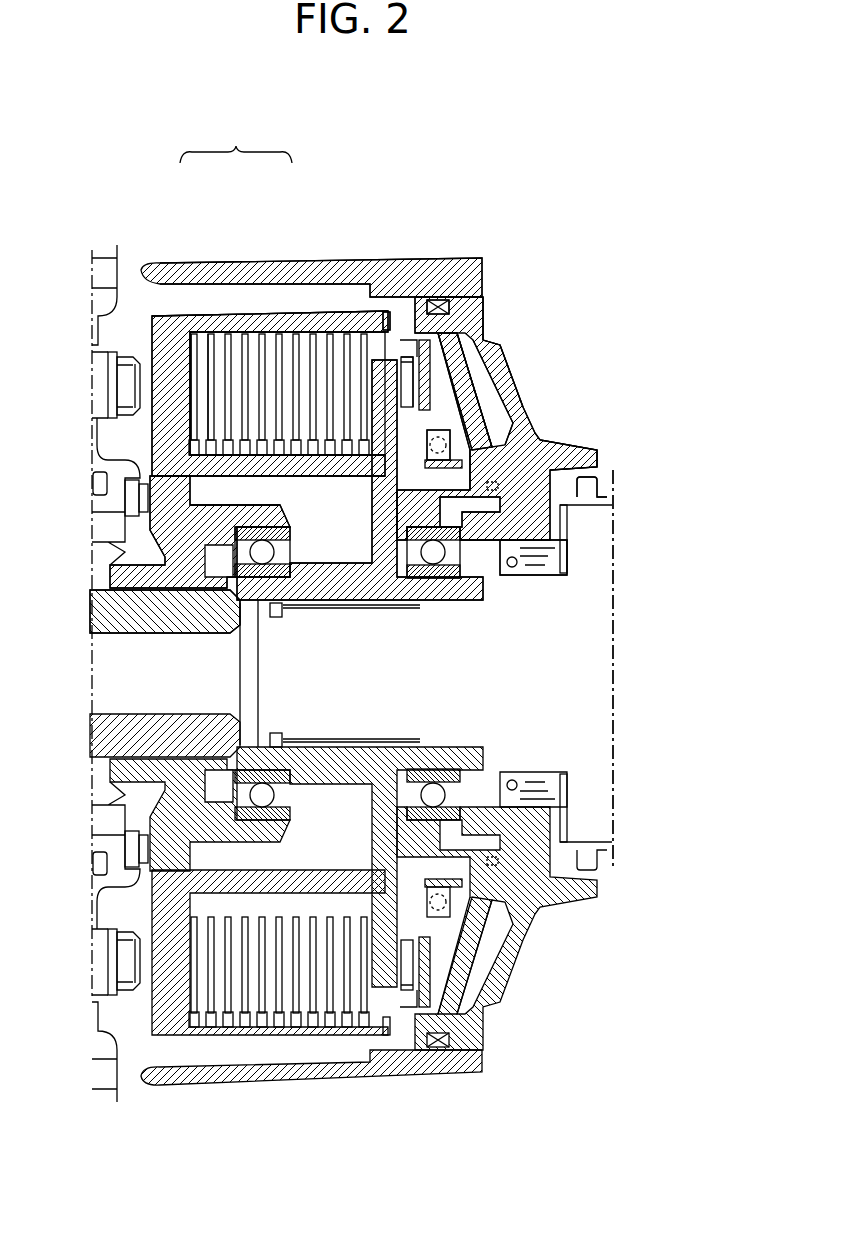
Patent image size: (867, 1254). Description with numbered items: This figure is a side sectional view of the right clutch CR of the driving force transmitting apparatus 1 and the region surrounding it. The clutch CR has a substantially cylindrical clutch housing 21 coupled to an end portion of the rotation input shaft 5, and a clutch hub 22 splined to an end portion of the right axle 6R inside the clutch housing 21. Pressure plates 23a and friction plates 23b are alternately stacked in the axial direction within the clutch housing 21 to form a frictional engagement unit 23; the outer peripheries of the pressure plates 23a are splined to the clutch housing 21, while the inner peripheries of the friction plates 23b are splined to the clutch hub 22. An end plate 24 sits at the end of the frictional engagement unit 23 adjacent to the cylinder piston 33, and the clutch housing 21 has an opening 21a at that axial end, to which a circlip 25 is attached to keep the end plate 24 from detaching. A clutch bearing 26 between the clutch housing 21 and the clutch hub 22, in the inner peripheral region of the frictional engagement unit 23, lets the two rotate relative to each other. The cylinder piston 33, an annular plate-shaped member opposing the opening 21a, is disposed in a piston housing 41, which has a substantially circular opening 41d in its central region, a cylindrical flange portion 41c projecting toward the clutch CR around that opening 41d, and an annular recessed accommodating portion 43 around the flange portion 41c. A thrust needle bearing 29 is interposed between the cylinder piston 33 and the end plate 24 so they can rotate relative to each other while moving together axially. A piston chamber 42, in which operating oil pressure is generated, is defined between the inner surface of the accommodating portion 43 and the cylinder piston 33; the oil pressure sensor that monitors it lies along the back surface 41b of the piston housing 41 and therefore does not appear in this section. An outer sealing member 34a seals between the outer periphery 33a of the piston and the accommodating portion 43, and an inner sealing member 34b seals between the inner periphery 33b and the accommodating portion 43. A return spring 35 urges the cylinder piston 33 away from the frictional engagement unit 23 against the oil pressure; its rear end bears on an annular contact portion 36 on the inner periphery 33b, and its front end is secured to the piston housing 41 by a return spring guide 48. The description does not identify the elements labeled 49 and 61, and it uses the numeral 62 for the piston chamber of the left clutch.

The driving force transmitting apparatus 1 is at (495, 176).
The right clutch CR is at (302, 312).
The rotation input shaft 5 is at (101, 617).
The right axle 6R is at (590, 732).
The clutch housing 21 is at (255, 318).
The opening 21a is at (450, 243).
The clutch hub 22 is at (372, 508).
The frictional engagement unit 23 is at (287, 287).
The pressure plates 23a is at (210, 330).
The friction plates 23b is at (197, 330).
The end plate 24 is at (386, 312).
The circlip 25 is at (407, 330).
The clutch bearing 26 is at (305, 600).
The thrust needle bearing 29 is at (450, 307).
The cylinder piston 33 is at (502, 397).
The outer periphery 33a is at (452, 330).
The inner periphery 33b is at (497, 513).
The outer sealing member 34a is at (440, 320).
The inner sealing member 34b is at (482, 527).
The return spring 35 is at (448, 461).
The contact portion 36 is at (583, 490).
The piston housing 41 is at (484, 331).
The back surface 41b is at (505, 358).
The flange portion 41c is at (400, 565).
The opening 41d is at (480, 596).
The piston chamber 42 is at (515, 390).
The accommodating portion 43 is at (494, 411).
The return spring guide 48 is at (375, 487).
The connecting portion 49 is at (520, 471).
The first bearing 61 is at (470, 558).
The piston chamber 62 is at (565, 546).